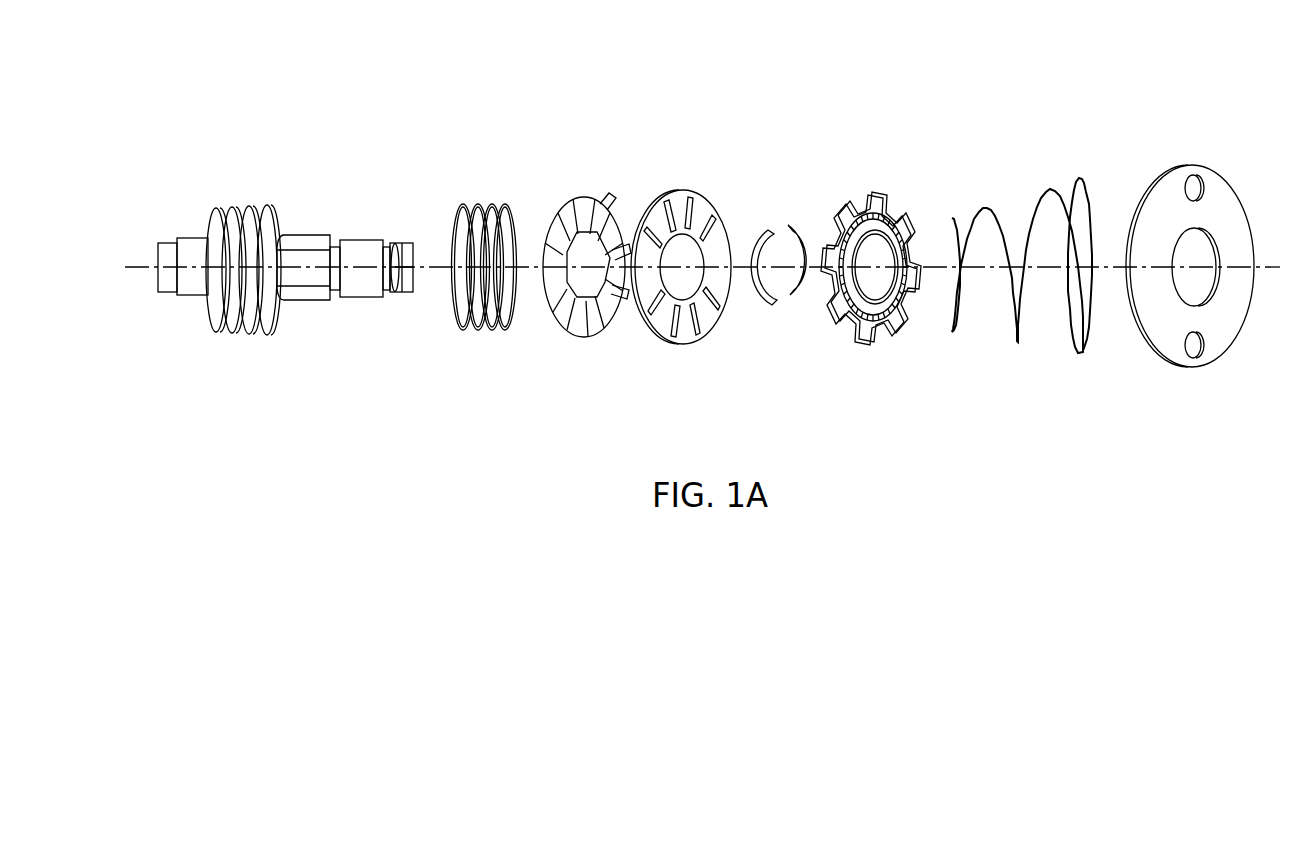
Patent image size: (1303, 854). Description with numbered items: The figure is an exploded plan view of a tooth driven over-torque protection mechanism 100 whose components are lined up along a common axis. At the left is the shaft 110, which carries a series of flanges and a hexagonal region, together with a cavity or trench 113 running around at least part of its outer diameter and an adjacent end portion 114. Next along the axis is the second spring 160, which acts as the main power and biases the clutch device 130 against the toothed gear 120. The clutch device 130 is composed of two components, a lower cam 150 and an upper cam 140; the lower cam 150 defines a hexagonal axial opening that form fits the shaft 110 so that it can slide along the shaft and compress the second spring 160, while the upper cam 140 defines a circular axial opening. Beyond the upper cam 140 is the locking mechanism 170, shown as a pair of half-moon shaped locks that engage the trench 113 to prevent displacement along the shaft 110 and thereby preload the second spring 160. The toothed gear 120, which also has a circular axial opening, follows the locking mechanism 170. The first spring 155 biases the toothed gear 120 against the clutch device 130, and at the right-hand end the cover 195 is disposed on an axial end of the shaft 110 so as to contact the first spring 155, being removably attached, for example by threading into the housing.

The tooth driven over-torque protection mechanism 100 is at (822, 104).
The shaft 110 is at (238, 318).
The cavity or trench 113 is at (335, 298).
The coupling body 114 is at (368, 289).
The second spring 160 is at (493, 328).
The clutch device 130 is at (723, 186).
The lower cam 150 is at (585, 323).
The upper cam 140 is at (707, 323).
The locking mechanism 170 is at (794, 328).
The toothed gear 120 is at (888, 196).
The first spring 155 is at (1012, 338).
The cover 195 is at (1160, 333).